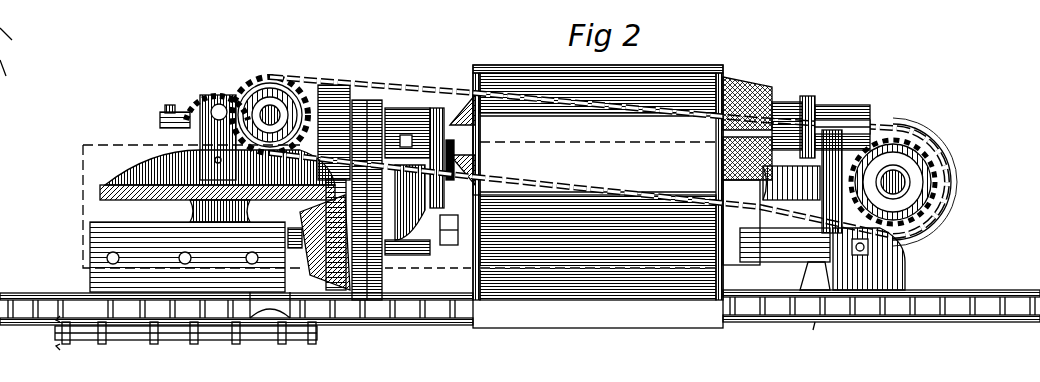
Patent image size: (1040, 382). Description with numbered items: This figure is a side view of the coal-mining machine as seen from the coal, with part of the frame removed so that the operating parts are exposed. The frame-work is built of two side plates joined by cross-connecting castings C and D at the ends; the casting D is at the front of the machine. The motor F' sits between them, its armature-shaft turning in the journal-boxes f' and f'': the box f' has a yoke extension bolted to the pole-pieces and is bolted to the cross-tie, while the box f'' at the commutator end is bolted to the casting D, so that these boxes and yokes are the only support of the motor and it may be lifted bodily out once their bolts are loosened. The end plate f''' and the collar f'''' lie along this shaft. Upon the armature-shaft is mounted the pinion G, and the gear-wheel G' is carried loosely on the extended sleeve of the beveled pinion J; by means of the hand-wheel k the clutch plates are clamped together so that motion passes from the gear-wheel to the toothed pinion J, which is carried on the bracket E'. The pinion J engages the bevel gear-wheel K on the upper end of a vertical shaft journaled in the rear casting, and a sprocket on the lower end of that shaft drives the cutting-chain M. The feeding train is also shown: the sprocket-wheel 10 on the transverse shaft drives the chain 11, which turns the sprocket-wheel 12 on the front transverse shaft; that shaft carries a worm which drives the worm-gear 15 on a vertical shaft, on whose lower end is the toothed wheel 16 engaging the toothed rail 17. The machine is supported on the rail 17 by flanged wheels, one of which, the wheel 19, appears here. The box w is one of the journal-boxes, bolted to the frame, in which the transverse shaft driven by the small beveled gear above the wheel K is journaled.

The box w is at (212, 114).
The sprocket-wheel 10 is at (270, 115).
The bevel gear-wheel K is at (160, 182).
The cross-connecting casting C is at (190, 270).
The beveled pinion J is at (320, 268).
The gear wheel G' is at (345, 216).
The pinion G is at (375, 175).
The chain 11 is at (608, 151).
The journal-box f' is at (407, 172).
The bracket E' is at (452, 152).
The hand-wheel k is at (450, 232).
The motor end plate f''' is at (487, 145).
The electric motor F' is at (598, 196).
The worm-gear 15 is at (762, 184).
The collar f'''' is at (807, 110).
The journal-box f'' is at (842, 111).
The sprocket-wheel 12 is at (889, 182).
The cross-connecting casting D is at (785, 259).
The flanged wheel 19 is at (869, 259).
The toothed wheel 16 is at (815, 334).
The toothed rail 17 is at (520, 294).
The cutting-chain M is at (75, 333).